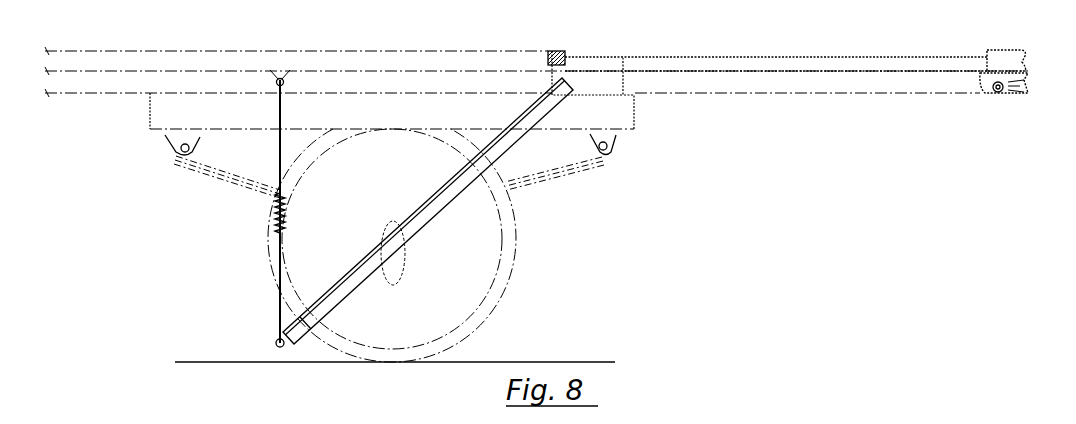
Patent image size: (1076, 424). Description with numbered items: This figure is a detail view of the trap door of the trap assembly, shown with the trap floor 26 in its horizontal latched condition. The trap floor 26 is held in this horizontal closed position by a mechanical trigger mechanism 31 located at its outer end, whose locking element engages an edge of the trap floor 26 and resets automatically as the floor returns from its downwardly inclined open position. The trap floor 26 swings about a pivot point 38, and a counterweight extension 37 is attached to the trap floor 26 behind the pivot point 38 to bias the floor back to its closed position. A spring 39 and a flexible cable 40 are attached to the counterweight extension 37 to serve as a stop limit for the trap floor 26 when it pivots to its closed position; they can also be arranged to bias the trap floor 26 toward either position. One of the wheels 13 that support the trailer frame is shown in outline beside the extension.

The wheels 13 is at (480, 275).
The trap floor 26 is at (880, 65).
The trigger mechanism 31 is at (978, 72).
The counterweight extension 37 is at (510, 150).
The pivot point 38 is at (548, 50).
The spring 39 is at (270, 213).
The flexible cable 40 is at (273, 302).